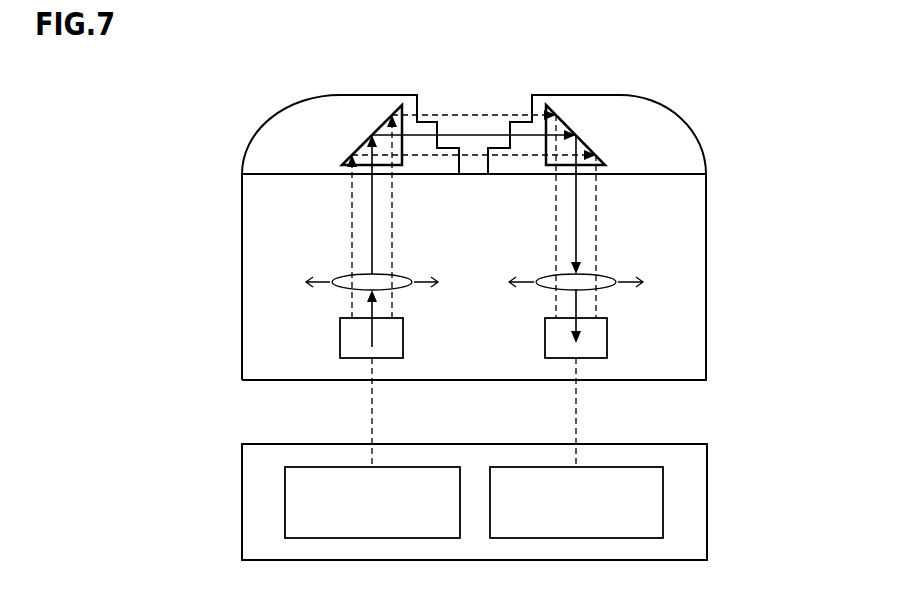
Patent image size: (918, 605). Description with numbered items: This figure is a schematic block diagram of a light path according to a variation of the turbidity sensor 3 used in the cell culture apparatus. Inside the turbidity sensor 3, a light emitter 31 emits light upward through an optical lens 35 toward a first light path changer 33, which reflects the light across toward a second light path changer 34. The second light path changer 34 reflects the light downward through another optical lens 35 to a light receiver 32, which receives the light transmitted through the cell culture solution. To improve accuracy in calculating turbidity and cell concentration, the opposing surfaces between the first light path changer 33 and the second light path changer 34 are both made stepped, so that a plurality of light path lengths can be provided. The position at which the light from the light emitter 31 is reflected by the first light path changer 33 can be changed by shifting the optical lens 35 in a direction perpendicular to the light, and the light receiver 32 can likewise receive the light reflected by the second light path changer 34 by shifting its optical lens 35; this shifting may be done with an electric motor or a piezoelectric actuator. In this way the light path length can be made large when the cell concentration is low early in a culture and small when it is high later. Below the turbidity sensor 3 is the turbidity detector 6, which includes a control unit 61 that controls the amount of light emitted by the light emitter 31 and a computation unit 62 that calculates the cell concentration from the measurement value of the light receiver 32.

The turbidity sensor 3 is at (706, 207).
The turbidity detector 6 is at (707, 455).
The light emitter 31 is at (340, 338).
The light receiver 32 is at (607, 338).
The first light path changer 33 is at (362, 145).
The second light path changer 34 is at (585, 140).
The optical lens 35 is at (335, 280).
The control unit 61 is at (285, 503).
The computation unit 62 is at (663, 502).